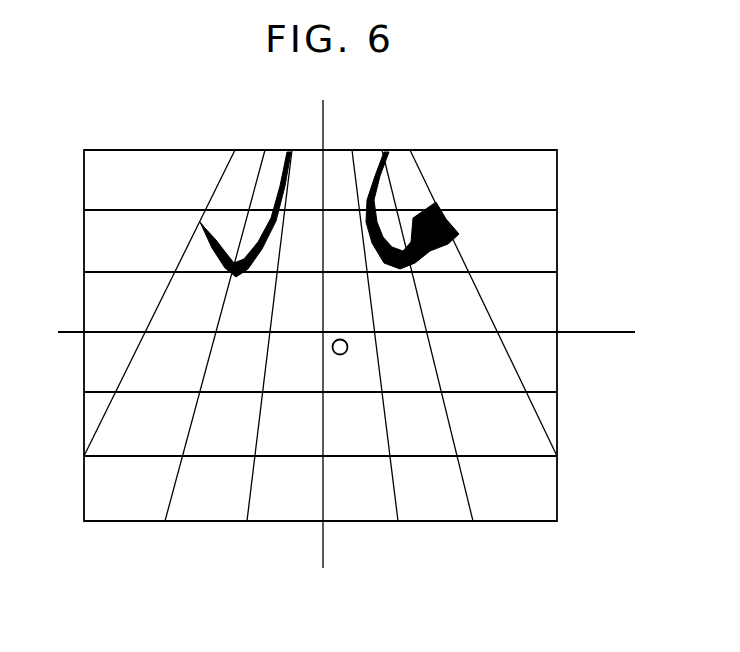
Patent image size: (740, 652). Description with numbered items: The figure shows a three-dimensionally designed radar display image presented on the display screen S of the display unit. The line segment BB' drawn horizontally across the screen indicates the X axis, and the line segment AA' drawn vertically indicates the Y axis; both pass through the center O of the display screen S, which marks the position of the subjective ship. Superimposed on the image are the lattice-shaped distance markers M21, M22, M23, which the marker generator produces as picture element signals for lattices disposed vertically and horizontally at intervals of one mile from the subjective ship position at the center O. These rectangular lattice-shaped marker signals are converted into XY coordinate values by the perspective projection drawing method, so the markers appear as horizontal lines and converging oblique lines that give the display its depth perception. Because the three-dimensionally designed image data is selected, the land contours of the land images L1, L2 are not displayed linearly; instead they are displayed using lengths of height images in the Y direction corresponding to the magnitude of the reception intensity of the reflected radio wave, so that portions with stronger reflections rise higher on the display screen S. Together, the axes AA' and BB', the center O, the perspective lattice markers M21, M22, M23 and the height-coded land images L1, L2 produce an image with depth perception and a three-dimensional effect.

The display screen S is at (521, 190).
The lattice-shaped distance marker M21 is at (557, 272).
The lattice-shaped distance marker M22 is at (557, 210).
The lattice-shaped distance marker M23 is at (226, 166).
The land image L1 is at (226, 246).
The land image L2 is at (388, 224).
The Y axis end point A is at (323, 320).
The Y axis end point A' is at (326, 588).
The X axis end point B is at (359, 333).
The X axis end point B' is at (44, 333).
The center O is at (340, 347).